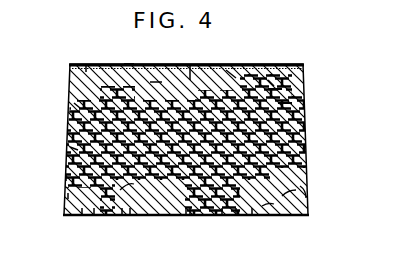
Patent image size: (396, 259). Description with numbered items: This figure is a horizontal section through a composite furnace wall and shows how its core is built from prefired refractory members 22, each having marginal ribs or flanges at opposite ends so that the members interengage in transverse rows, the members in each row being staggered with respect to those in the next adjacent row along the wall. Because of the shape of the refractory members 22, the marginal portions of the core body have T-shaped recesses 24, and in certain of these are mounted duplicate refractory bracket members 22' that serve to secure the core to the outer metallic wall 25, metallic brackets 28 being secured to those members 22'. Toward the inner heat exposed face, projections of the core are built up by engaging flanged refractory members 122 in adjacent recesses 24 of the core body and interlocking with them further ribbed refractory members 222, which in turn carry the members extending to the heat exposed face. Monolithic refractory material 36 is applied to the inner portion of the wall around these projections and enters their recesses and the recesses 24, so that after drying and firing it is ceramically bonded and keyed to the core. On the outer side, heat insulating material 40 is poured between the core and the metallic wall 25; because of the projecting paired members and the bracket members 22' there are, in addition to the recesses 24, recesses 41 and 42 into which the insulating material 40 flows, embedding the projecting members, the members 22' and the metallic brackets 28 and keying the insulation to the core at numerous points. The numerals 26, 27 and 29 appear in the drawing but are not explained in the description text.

The refractory member 22 is at (105, 100).
The refractory bracket member 22' is at (182, 67).
The T-shaped recess 24 is at (318, 192).
The metallic wall 25 is at (128, 64).
The filling yarn 26 is at (84, 216).
The filling yarn 27 is at (291, 196).
The metallic bracket 28 is at (272, 208).
The filling yarn 29 is at (259, 217).
The monolithic refractory material 36 is at (124, 216).
The heat insulating material 40 is at (232, 73).
The recess 41 is at (275, 90).
The recess 42 is at (285, 103).
The ribbed refractory member 122 is at (68, 177).
The ribbed refractory member 222 is at (72, 196).